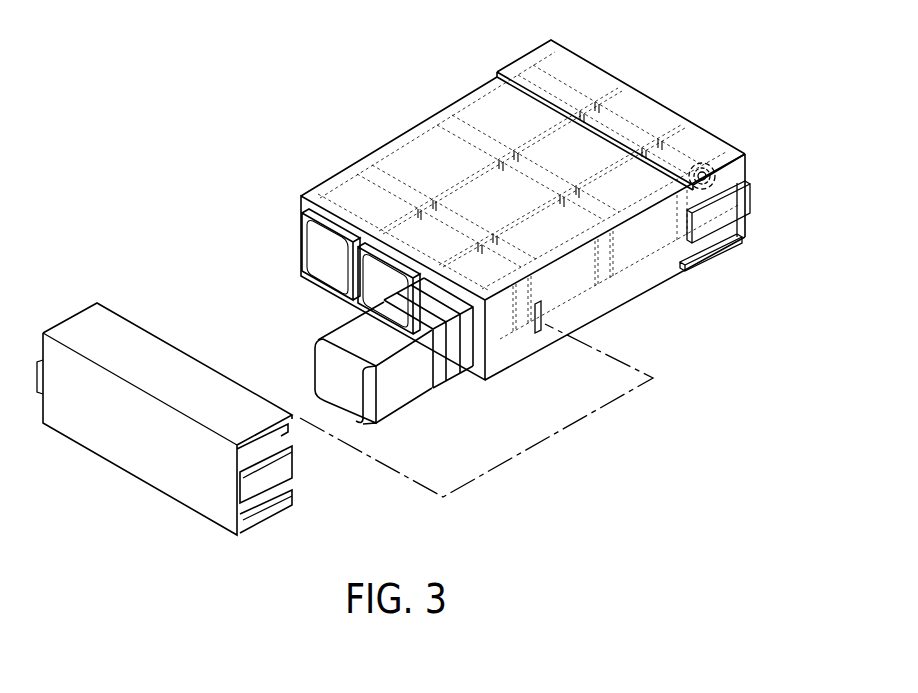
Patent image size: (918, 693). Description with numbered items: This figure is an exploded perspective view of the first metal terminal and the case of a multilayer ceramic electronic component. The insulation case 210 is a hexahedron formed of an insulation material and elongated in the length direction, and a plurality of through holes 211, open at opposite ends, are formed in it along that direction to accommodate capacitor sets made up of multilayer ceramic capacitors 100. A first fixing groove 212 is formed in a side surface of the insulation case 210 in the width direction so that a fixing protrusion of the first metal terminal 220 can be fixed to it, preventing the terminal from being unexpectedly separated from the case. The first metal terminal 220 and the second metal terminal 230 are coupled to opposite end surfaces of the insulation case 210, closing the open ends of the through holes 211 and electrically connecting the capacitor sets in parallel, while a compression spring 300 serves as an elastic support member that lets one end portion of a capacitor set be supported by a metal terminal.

The multilayer ceramic capacitor 100 is at (408, 404).
The insulation case 210 is at (432, 127).
The through hole 211 is at (670, 157).
The first fixing groove 212 is at (539, 320).
The first metal terminal 220 is at (110, 482).
The second metal terminal 230 is at (644, 70).
The compression spring 300 is at (706, 153).